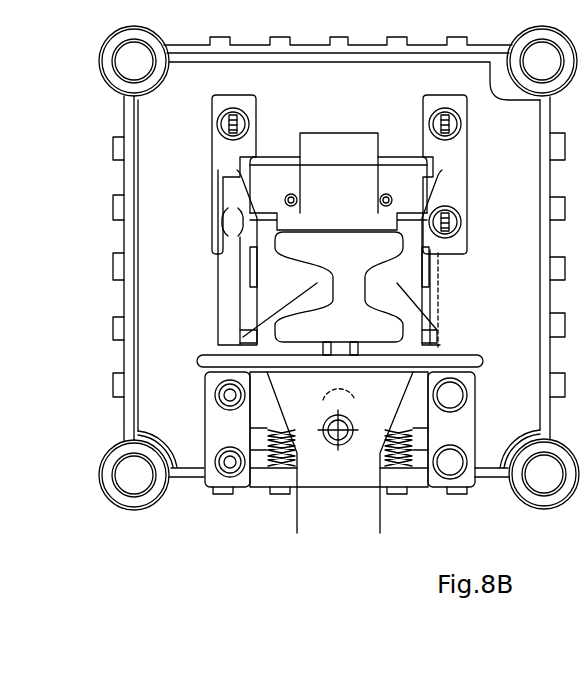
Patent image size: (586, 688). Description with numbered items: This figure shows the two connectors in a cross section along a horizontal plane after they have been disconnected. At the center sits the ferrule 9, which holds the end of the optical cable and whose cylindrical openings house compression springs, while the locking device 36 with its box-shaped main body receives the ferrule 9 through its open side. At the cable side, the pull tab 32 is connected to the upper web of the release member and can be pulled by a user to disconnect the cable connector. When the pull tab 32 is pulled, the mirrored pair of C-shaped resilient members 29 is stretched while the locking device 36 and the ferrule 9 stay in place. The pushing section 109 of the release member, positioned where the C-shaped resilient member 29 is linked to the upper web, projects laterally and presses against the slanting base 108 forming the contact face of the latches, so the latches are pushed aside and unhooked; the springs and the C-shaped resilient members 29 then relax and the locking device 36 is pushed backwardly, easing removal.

The C-shaped resilient member 29 is at (307, 303).
The ferrule 9 is at (265, 305).
The slanting base 108 is at (250, 336).
The pushing section 109 is at (247, 353).
The locking device 36 is at (213, 415).
The pull tab 32 is at (305, 503).